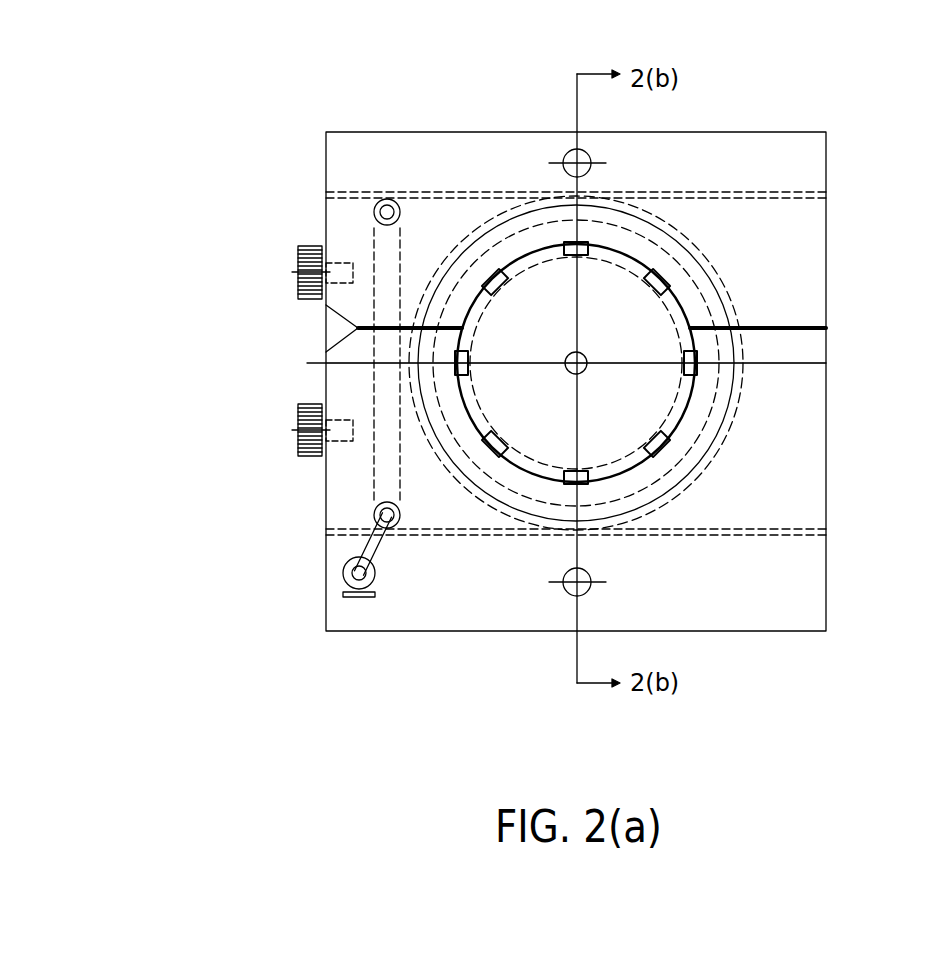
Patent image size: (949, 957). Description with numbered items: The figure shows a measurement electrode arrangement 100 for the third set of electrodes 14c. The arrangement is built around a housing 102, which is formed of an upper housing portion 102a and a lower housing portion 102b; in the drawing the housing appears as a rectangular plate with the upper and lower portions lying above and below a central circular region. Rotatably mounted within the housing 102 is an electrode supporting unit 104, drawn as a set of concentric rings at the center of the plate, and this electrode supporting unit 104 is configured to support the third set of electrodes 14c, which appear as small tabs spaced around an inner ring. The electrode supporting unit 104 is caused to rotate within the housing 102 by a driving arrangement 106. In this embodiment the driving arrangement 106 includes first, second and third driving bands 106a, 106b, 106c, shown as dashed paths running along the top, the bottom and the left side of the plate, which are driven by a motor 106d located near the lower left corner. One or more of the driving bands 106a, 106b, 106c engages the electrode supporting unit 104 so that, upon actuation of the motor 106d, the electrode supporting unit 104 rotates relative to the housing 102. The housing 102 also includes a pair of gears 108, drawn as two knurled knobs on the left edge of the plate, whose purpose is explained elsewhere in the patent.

The measurement electrode arrangement 100 is at (729, 694).
The housing 102 is at (787, 601).
The upper housing portion 102a is at (810, 165).
The lower housing portion 102b is at (793, 453).
The electrode supporting unit 104 is at (633, 237).
The third set of electrodes 14c is at (663, 280).
The driving arrangement 106 is at (391, 552).
The first driving band 106a is at (512, 193).
The second driving band 106b is at (512, 533).
The third driving band 106c is at (383, 465).
The motor 106d is at (352, 598).
The pair of gears 108 is at (297, 417).